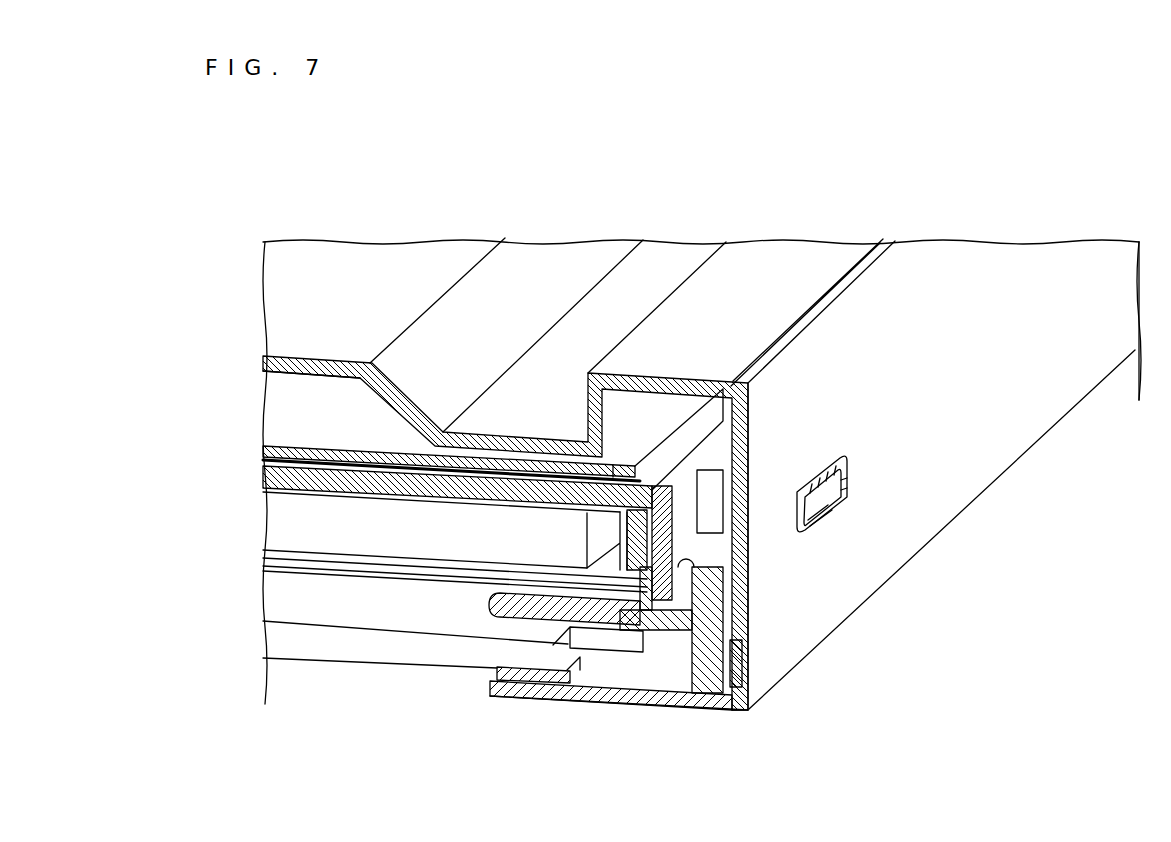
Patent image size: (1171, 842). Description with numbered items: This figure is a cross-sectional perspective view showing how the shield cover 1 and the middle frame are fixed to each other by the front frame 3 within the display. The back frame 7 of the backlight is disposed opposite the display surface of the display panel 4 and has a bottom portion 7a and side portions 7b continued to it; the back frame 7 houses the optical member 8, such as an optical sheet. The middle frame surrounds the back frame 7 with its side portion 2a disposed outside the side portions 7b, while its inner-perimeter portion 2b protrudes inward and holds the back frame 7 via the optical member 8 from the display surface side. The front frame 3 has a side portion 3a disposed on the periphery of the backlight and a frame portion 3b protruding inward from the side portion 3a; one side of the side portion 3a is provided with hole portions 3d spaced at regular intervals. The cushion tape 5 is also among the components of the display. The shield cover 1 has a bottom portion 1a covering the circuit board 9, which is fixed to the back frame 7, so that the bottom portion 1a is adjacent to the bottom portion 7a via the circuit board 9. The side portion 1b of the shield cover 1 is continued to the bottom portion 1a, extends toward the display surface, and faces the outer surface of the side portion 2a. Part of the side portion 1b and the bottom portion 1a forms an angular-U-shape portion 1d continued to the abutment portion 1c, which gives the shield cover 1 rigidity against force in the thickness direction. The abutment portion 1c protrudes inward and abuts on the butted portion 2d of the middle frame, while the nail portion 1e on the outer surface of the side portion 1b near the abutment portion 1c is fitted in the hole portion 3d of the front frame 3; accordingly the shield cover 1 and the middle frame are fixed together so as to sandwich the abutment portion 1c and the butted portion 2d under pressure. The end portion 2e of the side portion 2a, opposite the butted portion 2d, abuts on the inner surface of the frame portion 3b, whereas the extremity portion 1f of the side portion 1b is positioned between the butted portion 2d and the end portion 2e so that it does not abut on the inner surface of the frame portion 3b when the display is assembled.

The shield cover 1 is at (702, 442).
The bottom portion 1a is at (377, 257).
The side portion 1b is at (748, 440).
The abutment portion 1c is at (740, 545).
The angular-U-shape portion 1d is at (772, 258).
The nail portion 1e is at (832, 478).
The extremity portion 1f is at (745, 700).
The side portion 2a is at (712, 603).
The inner-perimeter portion 2b is at (517, 615).
The butted portion 2d is at (673, 600).
The end portion 2e is at (713, 690).
The front frame 3 is at (978, 515).
The side portion 3a is at (995, 437).
The frame portion 3b is at (597, 700).
The hole portion 3d is at (808, 522).
The display panel 4 is at (363, 647).
The cushion tape 5 is at (533, 675).
The back frame 7 is at (315, 450).
The bottom portion 7a is at (265, 465).
The side portion 7b is at (642, 527).
The optical member 8 is at (275, 522).
The circuit board 9 is at (280, 415).